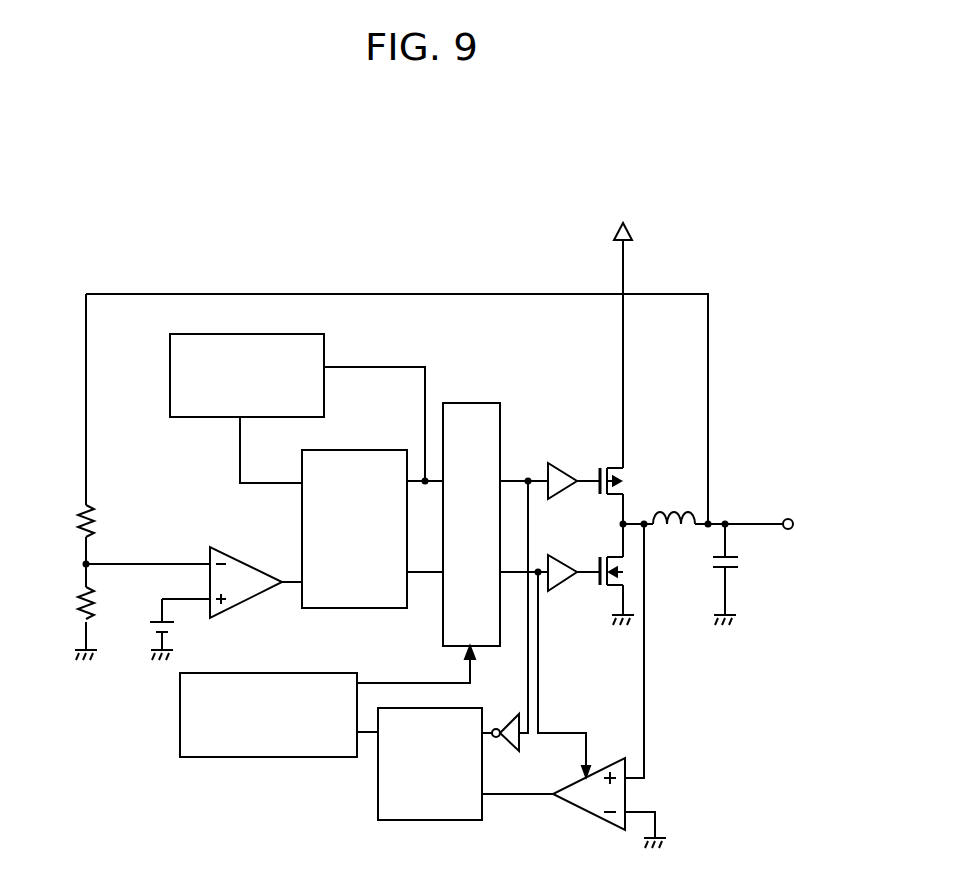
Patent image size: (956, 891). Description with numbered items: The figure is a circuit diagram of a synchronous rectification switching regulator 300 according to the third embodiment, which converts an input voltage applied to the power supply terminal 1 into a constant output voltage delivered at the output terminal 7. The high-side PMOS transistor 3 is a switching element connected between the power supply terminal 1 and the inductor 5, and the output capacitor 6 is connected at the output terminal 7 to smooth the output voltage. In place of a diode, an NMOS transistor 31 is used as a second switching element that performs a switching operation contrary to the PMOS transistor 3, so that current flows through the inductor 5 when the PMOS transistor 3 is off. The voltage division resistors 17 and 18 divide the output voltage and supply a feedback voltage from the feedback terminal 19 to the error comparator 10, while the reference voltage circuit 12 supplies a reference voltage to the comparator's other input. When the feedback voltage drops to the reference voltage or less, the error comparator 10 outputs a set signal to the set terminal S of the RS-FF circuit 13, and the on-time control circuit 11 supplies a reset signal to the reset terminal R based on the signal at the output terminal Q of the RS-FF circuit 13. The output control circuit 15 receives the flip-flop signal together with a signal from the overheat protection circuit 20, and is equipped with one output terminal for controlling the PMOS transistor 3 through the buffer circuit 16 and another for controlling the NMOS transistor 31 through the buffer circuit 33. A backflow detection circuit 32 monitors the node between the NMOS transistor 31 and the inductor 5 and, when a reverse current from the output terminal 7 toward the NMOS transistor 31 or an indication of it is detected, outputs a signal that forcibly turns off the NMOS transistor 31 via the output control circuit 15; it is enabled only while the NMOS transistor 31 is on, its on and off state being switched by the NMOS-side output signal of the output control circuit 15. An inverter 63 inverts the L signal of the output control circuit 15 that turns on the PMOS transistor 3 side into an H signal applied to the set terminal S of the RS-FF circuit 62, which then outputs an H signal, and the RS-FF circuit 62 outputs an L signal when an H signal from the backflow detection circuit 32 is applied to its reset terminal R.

The switching regulator 300 is at (442, 168).
The power supply terminal 1 is at (630, 222).
The PMOS transistor 3 is at (627, 475).
The inductor 5 is at (675, 505).
The output capacitor 6 is at (720, 572).
The output terminal 7 is at (788, 516).
The error comparator 10 is at (227, 548).
The on-time control circuit 11 is at (170, 376).
The reference voltage circuit 12 is at (176, 630).
The RS-FF circuit 13 is at (355, 608).
The output control circuit 15 is at (471, 403).
The buffer circuit 16 is at (560, 499).
The voltage division resistor 17 is at (97, 510).
The voltage division resistor 18 is at (98, 612).
The feedback terminal 19 is at (92, 556).
The overheat protection circuit 20 is at (180, 710).
The NMOS transistor 31 is at (627, 578).
The backflow detection circuit 32 is at (615, 762).
The buffer circuit 33 is at (560, 591).
The RS-FF circuit 62 is at (430, 820).
The inverter 63 is at (520, 745).